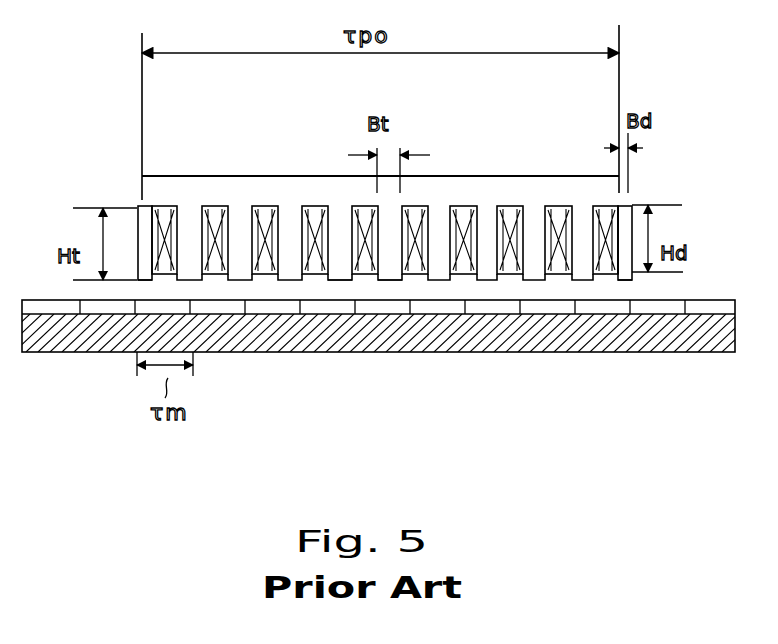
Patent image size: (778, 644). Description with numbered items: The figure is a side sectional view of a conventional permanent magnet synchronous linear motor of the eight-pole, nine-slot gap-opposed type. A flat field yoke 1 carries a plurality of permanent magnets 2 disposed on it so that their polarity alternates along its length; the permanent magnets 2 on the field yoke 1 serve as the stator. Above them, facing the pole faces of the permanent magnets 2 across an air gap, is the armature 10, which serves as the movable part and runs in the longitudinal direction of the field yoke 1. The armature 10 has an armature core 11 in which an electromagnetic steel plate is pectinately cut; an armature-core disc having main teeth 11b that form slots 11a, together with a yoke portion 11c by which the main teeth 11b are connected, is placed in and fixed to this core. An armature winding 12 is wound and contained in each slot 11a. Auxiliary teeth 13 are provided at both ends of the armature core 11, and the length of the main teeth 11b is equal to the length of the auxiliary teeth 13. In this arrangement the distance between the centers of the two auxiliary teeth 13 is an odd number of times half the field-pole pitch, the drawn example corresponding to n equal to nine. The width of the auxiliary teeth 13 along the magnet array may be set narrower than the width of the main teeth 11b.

The field yoke 1 is at (482, 355).
The permanent magnets 2 is at (592, 308).
The armature 10 is at (190, 165).
The armature core 11 is at (488, 178).
The slots 11a is at (318, 268).
The main teeth 11b is at (388, 278).
The yoke portion 11c is at (550, 190).
The armature winding 12 is at (265, 205).
The auxiliary teeth 13 is at (137, 212).